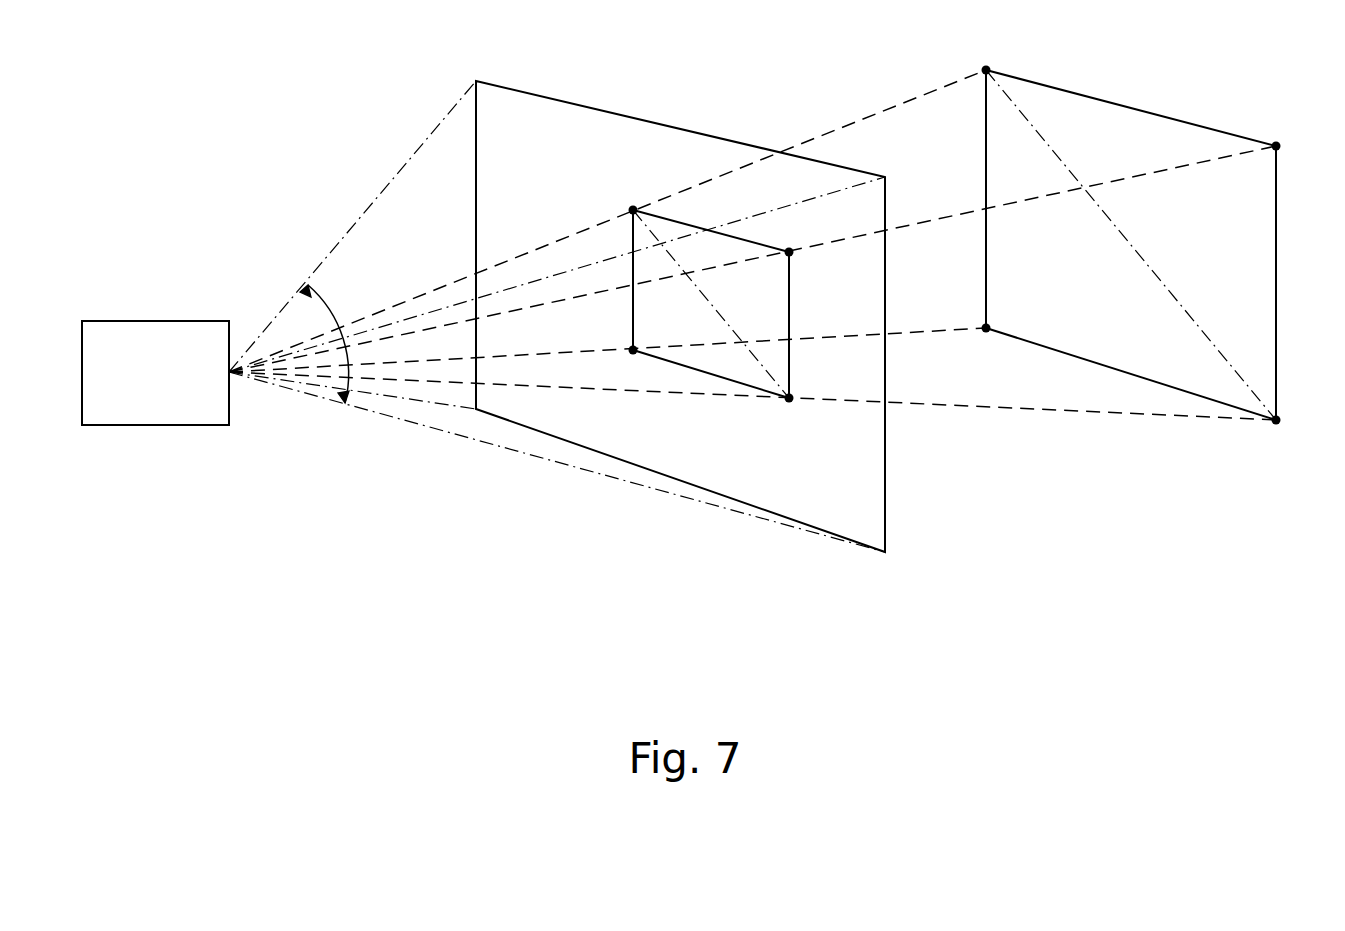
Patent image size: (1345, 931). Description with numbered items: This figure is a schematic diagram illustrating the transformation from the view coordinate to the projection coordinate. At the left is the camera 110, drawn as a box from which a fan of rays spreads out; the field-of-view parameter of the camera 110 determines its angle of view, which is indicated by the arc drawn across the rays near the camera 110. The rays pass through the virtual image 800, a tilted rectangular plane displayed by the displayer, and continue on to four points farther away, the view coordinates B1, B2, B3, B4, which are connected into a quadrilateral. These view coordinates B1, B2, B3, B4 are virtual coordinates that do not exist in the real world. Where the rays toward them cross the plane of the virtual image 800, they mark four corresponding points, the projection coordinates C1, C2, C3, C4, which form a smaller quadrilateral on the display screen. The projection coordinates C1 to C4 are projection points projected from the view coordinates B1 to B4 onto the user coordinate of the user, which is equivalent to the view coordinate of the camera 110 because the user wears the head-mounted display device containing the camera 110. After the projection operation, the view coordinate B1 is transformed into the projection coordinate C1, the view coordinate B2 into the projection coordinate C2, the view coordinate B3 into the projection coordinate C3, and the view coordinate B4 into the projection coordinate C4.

The camera 110 is at (132, 389).
The virtual image 800 is at (885, 495).
The projection coordinate C1 is at (618, 193).
The projection coordinate C2 is at (807, 265).
The projection coordinate C3 is at (616, 334).
The projection coordinate C4 is at (800, 414).
The view coordinate B1 is at (968, 56).
The view coordinate B2 is at (1297, 133).
The view coordinate B3 is at (969, 345).
The view coordinate B4 is at (1296, 433).